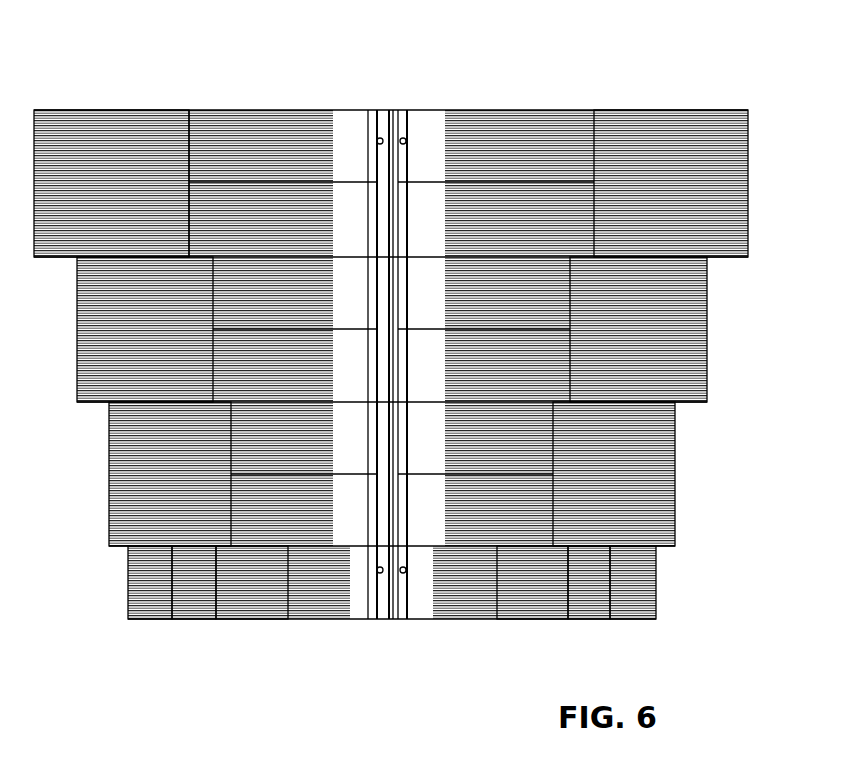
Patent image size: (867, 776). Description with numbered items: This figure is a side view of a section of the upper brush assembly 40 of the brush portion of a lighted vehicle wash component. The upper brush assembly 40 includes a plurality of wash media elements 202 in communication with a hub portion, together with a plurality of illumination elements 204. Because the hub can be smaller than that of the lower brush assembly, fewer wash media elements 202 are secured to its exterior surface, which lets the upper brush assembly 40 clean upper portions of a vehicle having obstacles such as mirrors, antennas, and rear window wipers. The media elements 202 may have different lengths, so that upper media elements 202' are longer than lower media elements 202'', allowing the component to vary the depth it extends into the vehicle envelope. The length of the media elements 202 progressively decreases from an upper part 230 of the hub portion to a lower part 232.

The upper brush assembly 40 is at (428, 370).
The wash media elements 202 is at (419, 355).
The upper media elements 202' is at (428, 148).
The lower media elements 202'' is at (424, 498).
The illumination elements 204 is at (393, 620).
The upper part 230 is at (756, 167).
The lower part 232 is at (729, 605).